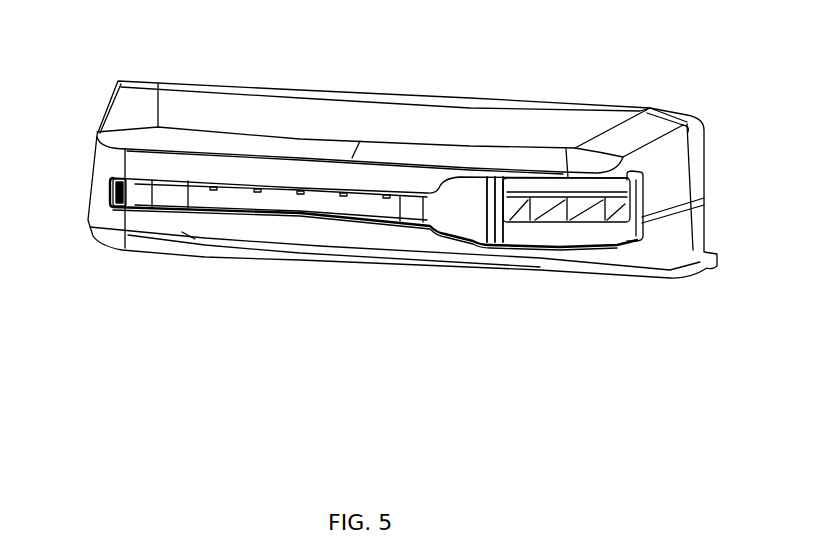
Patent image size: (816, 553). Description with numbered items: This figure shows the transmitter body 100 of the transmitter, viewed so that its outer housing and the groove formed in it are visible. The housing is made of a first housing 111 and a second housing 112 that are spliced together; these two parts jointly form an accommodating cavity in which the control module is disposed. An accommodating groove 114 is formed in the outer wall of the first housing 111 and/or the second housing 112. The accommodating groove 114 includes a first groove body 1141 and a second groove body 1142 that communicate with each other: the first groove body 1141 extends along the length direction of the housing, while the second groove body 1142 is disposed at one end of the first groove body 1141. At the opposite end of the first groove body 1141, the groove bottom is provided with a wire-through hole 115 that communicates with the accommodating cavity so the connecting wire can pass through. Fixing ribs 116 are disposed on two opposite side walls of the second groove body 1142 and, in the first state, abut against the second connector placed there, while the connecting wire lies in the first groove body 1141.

The transmitter body 100 is at (98, 84).
The first housing 111 is at (677, 158).
The second housing 112 is at (663, 250).
The accommodating groove 114 is at (523, 325).
The first groove body 1141 is at (330, 200).
The second groove body 1142 is at (520, 232).
The wire-through hole 115 is at (130, 187).
The fixing ribs 116 is at (597, 215).